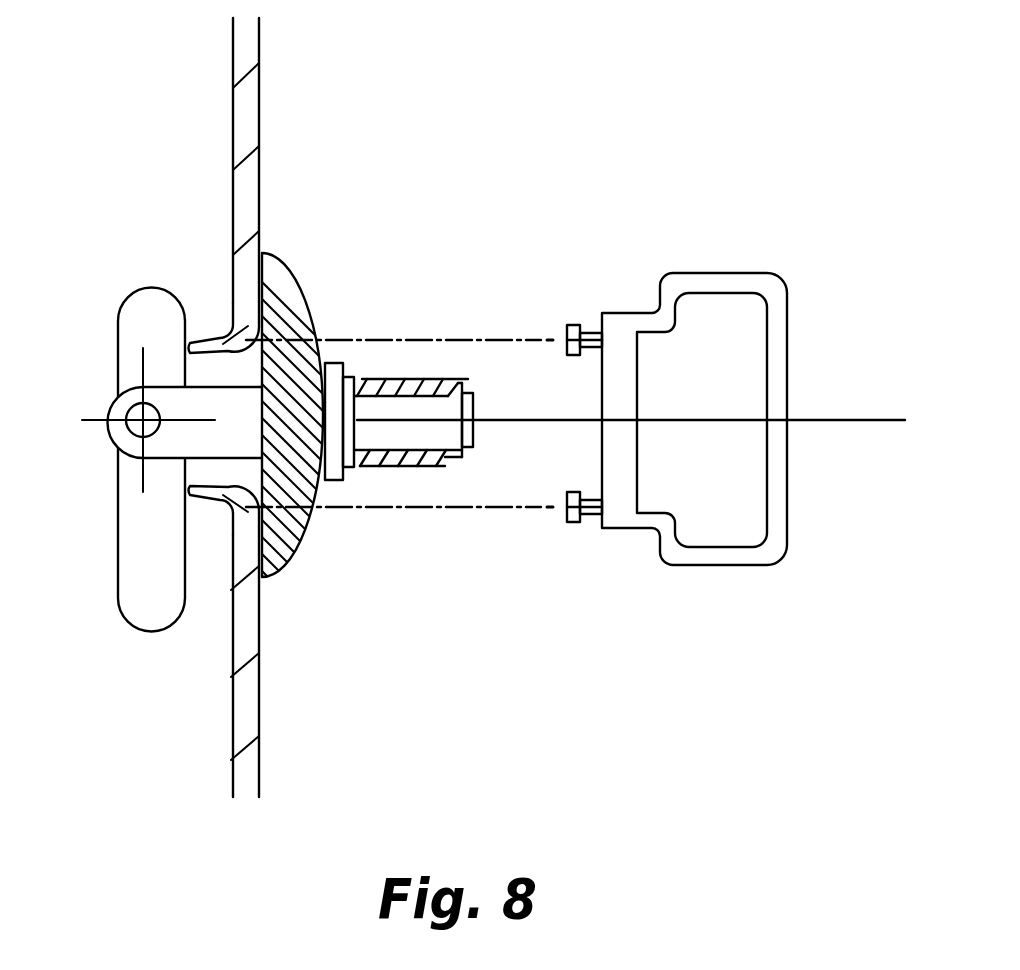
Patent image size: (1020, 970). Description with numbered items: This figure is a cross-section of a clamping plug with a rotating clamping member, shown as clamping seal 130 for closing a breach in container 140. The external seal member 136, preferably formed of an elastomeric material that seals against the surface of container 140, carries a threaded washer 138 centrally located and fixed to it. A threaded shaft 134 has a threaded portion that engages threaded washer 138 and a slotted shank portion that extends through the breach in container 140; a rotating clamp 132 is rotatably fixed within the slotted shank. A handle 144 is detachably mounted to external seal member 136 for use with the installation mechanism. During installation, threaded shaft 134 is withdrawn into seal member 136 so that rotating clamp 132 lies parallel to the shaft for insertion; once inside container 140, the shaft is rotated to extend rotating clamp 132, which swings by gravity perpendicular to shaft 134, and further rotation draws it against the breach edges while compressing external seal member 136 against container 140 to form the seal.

The clamping seal 130 is at (319, 232).
The rotating clamp 132 is at (143, 617).
The threaded shaft 134 is at (370, 410).
The external seal member 136 is at (273, 563).
The threaded washer 138 is at (343, 477).
The container 140 is at (257, 707).
The handle 144 is at (740, 558).